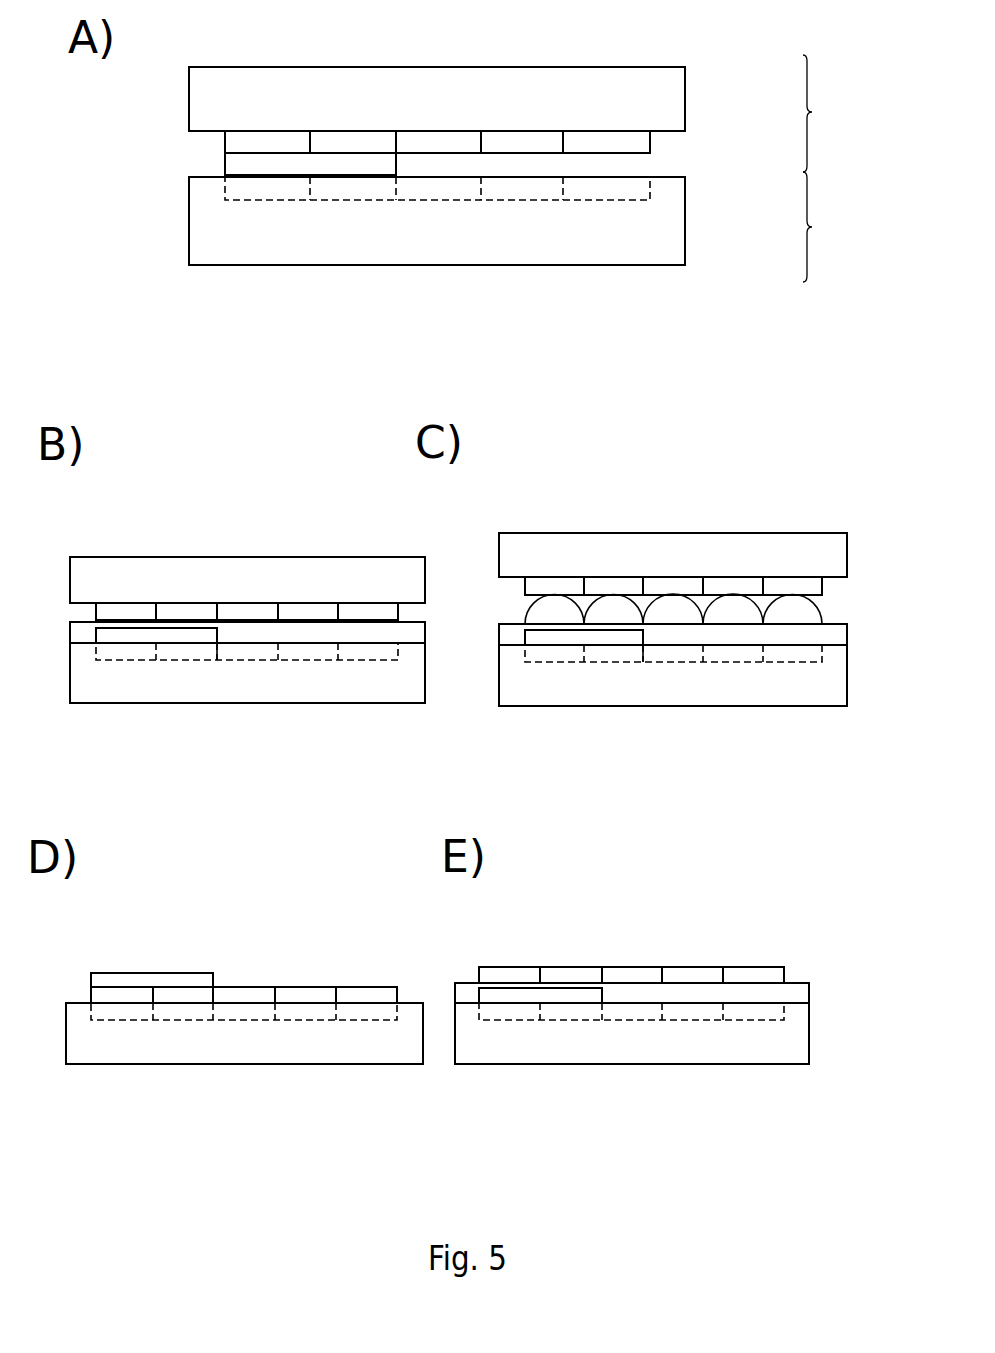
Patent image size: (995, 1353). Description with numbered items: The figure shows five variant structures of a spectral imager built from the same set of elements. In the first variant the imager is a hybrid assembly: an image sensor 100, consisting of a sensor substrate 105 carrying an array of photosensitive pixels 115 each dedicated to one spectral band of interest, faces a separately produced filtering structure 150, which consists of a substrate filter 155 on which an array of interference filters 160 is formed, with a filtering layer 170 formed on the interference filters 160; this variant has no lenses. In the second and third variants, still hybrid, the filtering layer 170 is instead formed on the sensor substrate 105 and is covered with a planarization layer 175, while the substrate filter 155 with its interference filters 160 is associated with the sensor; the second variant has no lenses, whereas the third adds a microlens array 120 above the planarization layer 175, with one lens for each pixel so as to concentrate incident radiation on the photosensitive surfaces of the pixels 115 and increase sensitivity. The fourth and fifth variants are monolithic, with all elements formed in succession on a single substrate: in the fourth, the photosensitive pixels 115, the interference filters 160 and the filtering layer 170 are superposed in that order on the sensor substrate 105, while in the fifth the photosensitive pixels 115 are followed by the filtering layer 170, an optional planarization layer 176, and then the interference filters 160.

The image sensor 100 is at (830, 227).
The sensor substrate 105 is at (677, 223).
The photosensitive pixels 115 is at (456, 659).
The microlens array 120 is at (803, 612).
The filtering structure 150 is at (831, 113).
The substrate filter 155 is at (677, 83).
The interference filters 160 is at (456, 508).
The filtering layer 170 is at (238, 167).
The planarization layer 175 is at (232, 637).
The planarization layer 176 is at (470, 990).